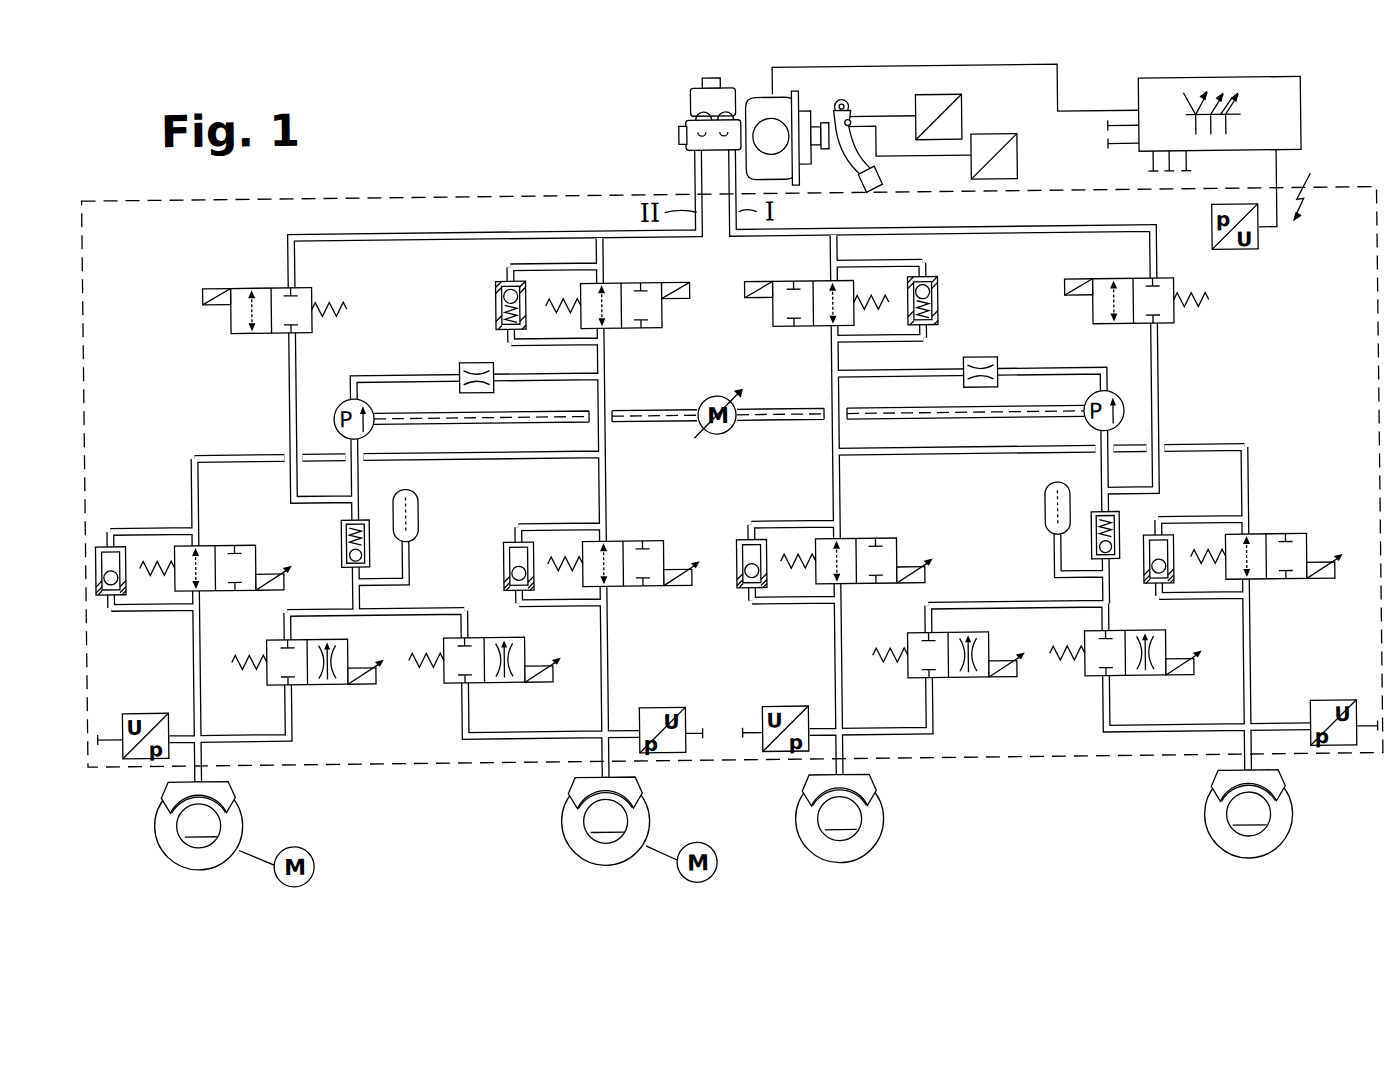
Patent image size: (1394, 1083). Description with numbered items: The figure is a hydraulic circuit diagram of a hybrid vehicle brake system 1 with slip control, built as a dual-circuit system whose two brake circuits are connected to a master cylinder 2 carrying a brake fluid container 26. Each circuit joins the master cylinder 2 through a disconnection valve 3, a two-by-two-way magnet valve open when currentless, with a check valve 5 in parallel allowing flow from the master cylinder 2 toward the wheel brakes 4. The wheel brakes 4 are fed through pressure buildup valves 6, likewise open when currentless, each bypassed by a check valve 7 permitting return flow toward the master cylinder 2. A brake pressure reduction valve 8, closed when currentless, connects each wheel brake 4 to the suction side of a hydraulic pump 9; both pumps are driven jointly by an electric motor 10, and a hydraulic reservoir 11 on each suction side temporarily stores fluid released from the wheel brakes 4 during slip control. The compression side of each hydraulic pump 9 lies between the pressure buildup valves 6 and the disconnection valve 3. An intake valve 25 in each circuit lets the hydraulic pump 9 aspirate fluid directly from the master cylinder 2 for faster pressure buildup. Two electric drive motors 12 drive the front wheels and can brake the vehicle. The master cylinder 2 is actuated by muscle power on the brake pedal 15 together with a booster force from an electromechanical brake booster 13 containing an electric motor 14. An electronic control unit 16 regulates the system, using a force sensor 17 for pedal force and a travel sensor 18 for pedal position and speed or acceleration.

The hybrid vehicle brake system 1 is at (418, 168).
The master cylinder 2 is at (700, 140).
The disconnection valve 3 is at (612, 329).
The wheel brake 4 is at (217, 788).
The check valve 5 is at (498, 300).
The pressure buildup valve 6 is at (207, 548).
The check valve 7 is at (110, 540).
The brake pressure reduction valve 8 is at (302, 677).
The hydraulic pump 9 is at (345, 403).
The electric motor 10 is at (718, 396).
The hydraulic reservoir 11 is at (414, 504).
The electric drive motor 12 is at (290, 842).
The brake booster 13 is at (770, 106).
The electric motor 14 is at (784, 124).
The brake pedal 15 is at (871, 188).
The electronic control unit 16 is at (1143, 106).
The force sensor 17 is at (1021, 160).
The travel sensor 18 is at (966, 112).
The intake valve 25 is at (266, 284).
The brake fluid container 26 is at (712, 102).